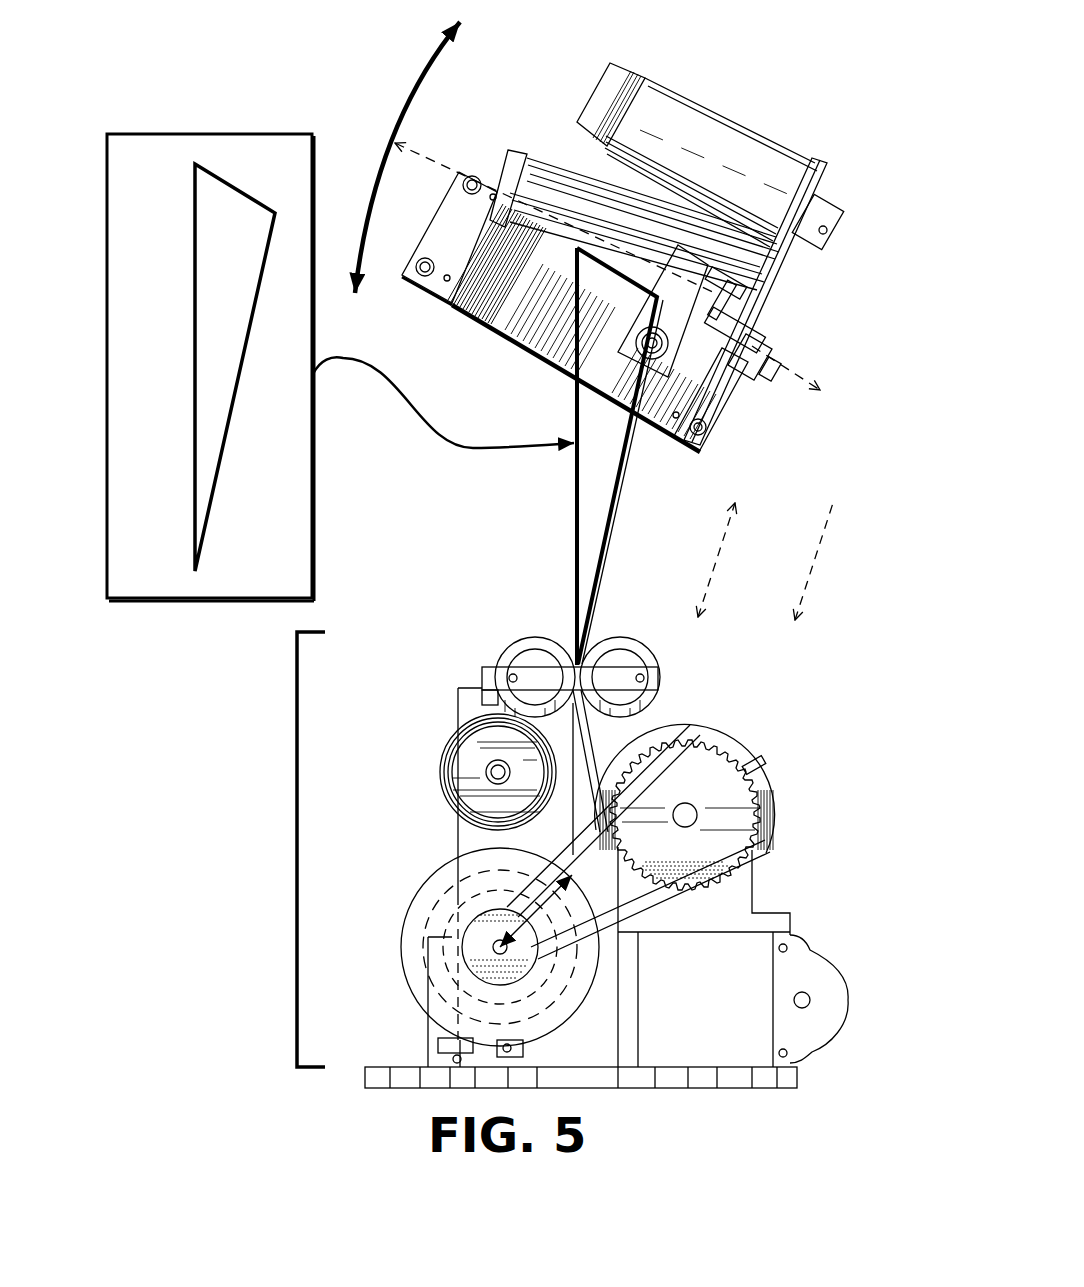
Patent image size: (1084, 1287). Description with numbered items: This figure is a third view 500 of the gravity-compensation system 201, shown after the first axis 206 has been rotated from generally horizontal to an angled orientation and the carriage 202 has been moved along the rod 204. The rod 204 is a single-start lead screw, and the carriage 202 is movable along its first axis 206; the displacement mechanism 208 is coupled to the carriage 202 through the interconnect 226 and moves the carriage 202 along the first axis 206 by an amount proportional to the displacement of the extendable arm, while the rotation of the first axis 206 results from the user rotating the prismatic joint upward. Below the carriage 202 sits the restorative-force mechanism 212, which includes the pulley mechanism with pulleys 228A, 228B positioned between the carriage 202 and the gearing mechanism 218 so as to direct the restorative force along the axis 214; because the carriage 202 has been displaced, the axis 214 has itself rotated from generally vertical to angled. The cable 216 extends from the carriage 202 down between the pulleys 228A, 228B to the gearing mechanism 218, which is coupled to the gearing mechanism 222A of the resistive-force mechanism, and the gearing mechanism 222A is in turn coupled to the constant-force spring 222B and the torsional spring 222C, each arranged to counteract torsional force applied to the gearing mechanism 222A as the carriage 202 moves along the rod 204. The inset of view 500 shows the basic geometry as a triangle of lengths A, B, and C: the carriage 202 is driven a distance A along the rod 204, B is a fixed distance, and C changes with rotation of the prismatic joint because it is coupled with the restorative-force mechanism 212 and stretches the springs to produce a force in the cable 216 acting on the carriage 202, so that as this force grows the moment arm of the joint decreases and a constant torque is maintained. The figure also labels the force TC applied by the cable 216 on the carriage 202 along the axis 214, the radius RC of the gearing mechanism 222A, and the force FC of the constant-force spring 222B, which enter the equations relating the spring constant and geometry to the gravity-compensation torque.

The gravity-compensation system 201 is at (851, 98).
The carriage 202 is at (651, 360).
The rod 204 is at (527, 237).
The first axis 206 is at (795, 378).
The displacement mechanism 208 is at (646, 121).
The restorative-force mechanism 212 is at (296, 966).
The axis 214 is at (715, 570).
The cable 216 is at (633, 521).
The gearing mechanism 218 is at (772, 812).
The gearing mechanism 222A is at (415, 903).
The constant-force spring 222B is at (442, 760).
The torsional spring 222C is at (430, 993).
The interconnect 226 is at (767, 304).
The pulley 228A is at (527, 633).
The pulley 228B is at (615, 632).
The third view 500 is at (210, 325).
The length A is at (233, 188).
The length B is at (196, 421).
The length C is at (210, 511).
The force of constant-force spring FC is at (567, 815).
The radius of gearing mechanism RC is at (540, 952).
The force applied by cable on carriage TC is at (807, 598).